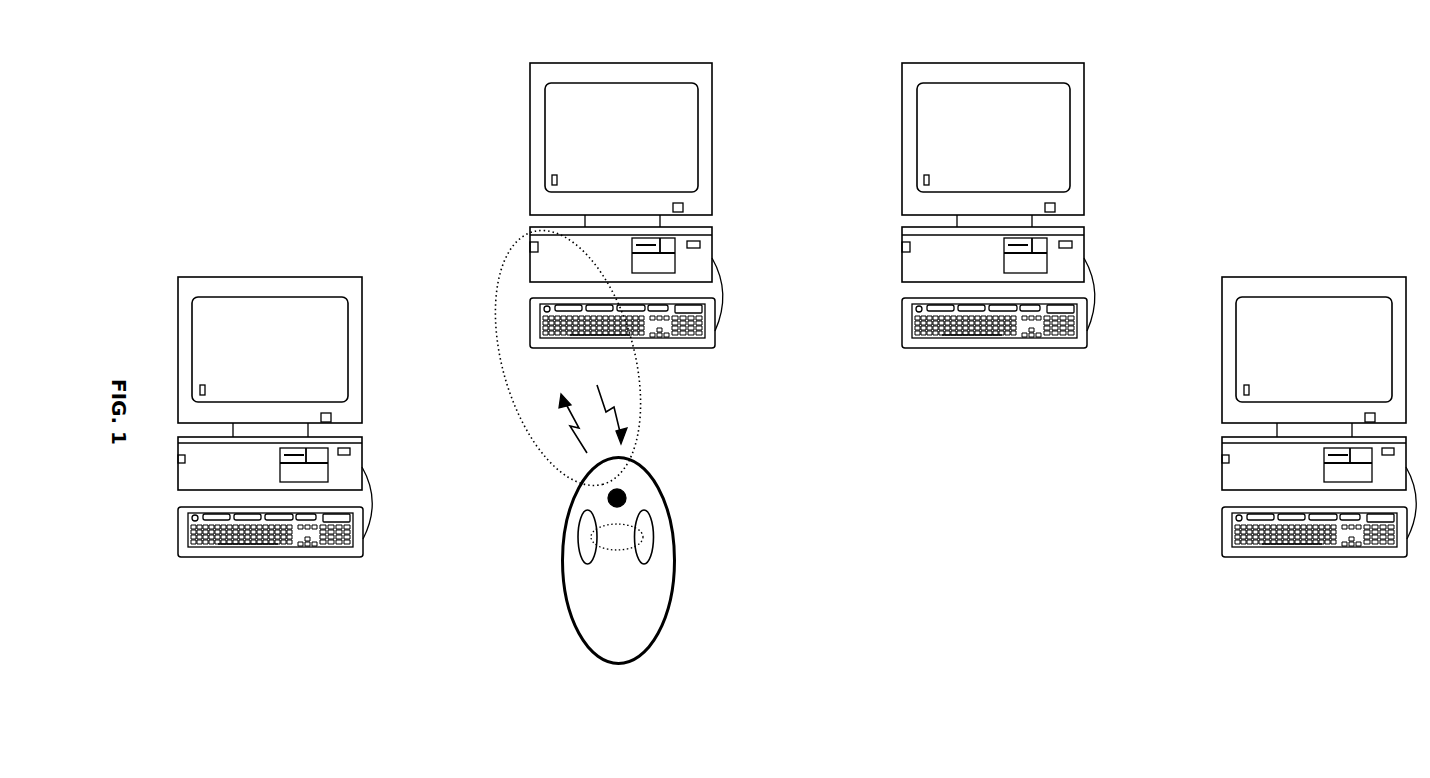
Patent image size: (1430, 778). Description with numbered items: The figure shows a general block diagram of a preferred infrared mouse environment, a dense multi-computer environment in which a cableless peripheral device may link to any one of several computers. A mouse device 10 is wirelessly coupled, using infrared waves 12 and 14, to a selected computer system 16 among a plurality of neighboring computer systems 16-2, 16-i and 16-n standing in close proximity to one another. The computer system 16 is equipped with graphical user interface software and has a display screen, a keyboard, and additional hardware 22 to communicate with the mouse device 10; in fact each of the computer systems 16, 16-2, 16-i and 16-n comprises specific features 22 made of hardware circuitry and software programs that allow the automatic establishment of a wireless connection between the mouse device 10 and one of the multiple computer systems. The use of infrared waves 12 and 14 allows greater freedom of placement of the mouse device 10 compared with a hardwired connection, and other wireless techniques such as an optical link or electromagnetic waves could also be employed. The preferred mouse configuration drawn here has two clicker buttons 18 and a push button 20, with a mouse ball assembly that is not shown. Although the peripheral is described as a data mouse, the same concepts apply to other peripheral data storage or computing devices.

The mouse device 10 is at (675, 557).
The infrared waves 12 is at (617, 408).
The infrared waves 14 is at (571, 427).
The computer system 16 is at (528, 118).
The computer system 16-2 is at (270, 276).
The computer system 16-i is at (900, 115).
The computer system 16-n is at (1330, 277).
The clicker buttons 18 is at (640, 556).
The push button 20 is at (628, 495).
The additional hardware 22 is at (530, 247).